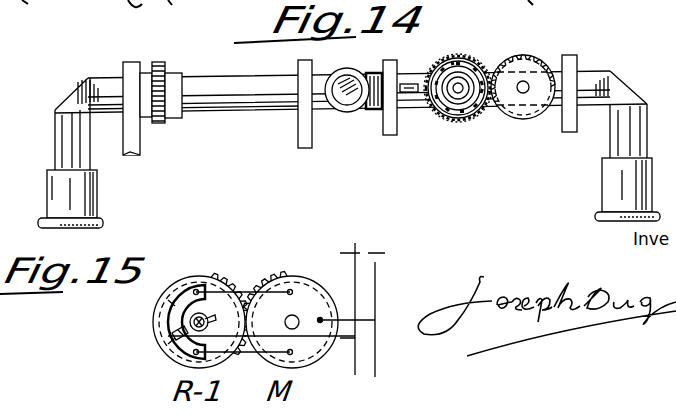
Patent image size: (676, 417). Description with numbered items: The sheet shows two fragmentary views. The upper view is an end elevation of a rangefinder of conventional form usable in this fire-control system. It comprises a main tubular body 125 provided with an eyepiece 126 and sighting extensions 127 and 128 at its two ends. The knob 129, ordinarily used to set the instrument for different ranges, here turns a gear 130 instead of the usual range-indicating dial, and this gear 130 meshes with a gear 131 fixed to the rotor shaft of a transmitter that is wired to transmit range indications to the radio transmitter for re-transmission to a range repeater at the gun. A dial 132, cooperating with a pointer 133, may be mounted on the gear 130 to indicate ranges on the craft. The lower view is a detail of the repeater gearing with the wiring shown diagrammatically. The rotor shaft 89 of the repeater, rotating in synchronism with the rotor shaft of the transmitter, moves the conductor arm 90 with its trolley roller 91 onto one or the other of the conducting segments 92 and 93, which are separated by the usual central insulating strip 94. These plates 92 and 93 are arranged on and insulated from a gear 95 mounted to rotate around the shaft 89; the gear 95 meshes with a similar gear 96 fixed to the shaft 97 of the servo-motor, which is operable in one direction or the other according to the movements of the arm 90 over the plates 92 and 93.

In FIG. 14, the main tubular body 125 is at (229, 79).
In FIG. 14, the eyepiece 126 is at (350, 98).
In FIG. 14, the sighting extension 127 is at (86, 192).
In FIG. 14, the sighting extension 128 is at (612, 184).
In FIG. 14, the knob 129 is at (457, 95).
In FIG. 14, the gear 130 is at (455, 59).
In FIG. 14, the gear 131 is at (522, 59).
In FIG. 14, the dial 132 is at (480, 113).
In FIG. 14, the pointer 133 is at (407, 93).
In FIG. 15, the rotor shaft 89 is at (208, 321).
In FIG. 15, the conductor arm 90 is at (166, 318).
In FIG. 15, the trolley roller 91 is at (170, 352).
In FIG. 15, the conducting segment 92 is at (182, 356).
In FIG. 15, the conducting segment 93 is at (168, 298).
In FIG. 15, the central insulating strip 94 is at (172, 327).
In FIG. 15, the gear 95 is at (217, 283).
In FIG. 15, the gear 96 is at (307, 287).
In FIG. 15, the shaft 97 is at (298, 318).